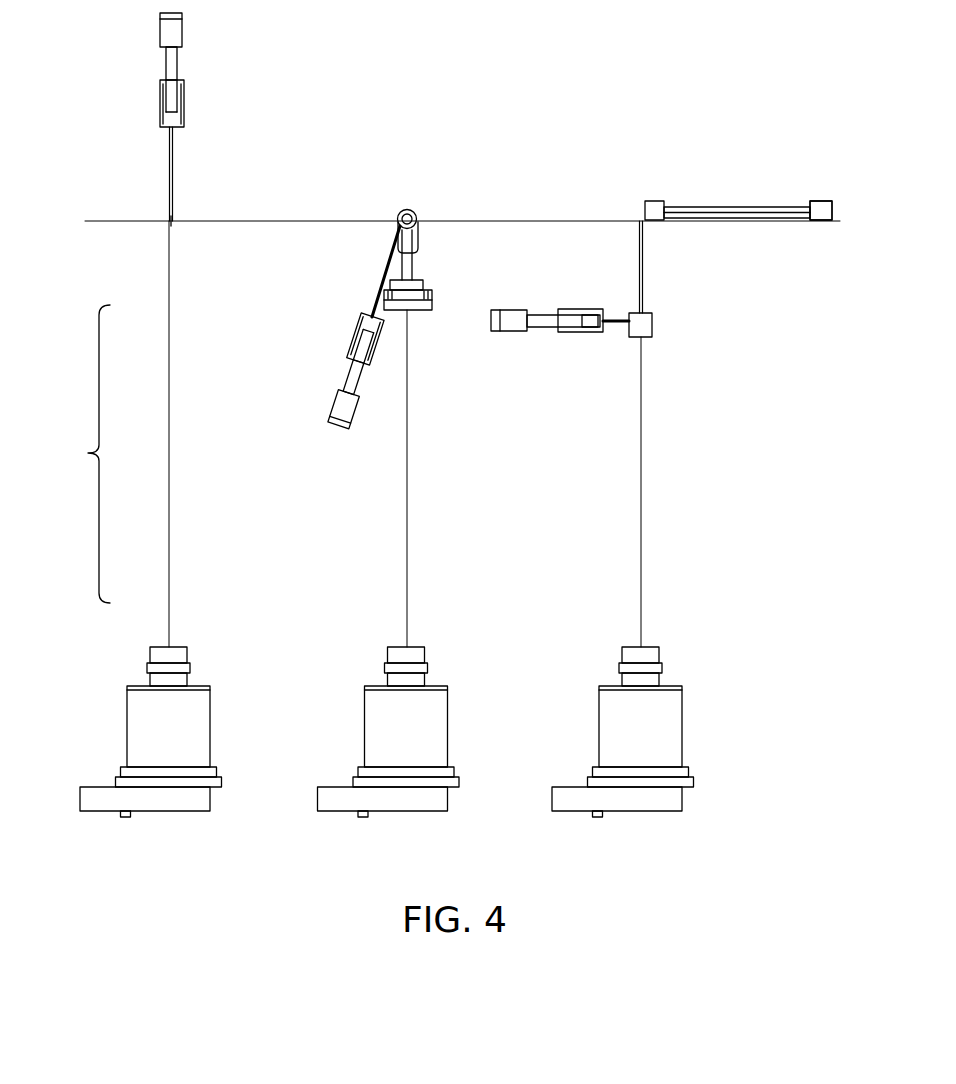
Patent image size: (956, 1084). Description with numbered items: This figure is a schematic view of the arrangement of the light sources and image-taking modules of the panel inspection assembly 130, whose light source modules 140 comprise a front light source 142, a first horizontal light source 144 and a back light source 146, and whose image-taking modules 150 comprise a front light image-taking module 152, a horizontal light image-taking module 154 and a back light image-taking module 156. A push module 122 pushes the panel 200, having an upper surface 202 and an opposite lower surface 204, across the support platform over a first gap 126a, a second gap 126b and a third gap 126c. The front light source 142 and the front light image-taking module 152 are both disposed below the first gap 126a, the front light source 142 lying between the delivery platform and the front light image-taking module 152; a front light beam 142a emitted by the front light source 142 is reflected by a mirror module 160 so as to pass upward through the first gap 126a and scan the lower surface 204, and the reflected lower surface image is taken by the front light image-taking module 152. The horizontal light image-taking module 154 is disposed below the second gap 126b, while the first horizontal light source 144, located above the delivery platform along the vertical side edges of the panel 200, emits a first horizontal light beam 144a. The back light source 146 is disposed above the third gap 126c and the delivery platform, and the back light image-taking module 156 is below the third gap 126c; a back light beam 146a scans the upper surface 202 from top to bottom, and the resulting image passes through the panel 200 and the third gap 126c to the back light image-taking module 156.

The push module 122 is at (645, 210).
The first gap 126a is at (649, 228).
The second gap 126b is at (393, 211).
The third gap 126c is at (162, 218).
The panel inspection assembly 130 is at (76, 454).
The light source modules 140 is at (157, 353).
The front light source 142 is at (535, 314).
The front light beam 142a is at (618, 319).
The first horizontal light source 144 is at (339, 404).
The first horizontal light beam 144a is at (381, 273).
The back light source 146 is at (177, 67).
The back light beam 146a is at (176, 184).
The image-taking modules 150 is at (149, 643).
The front light image-taking module 152 is at (670, 727).
The horizontal light image-taking module 154 is at (433, 730).
The back light image-taking module 156 is at (200, 727).
The mirror module 160 is at (652, 322).
The panel 200 is at (728, 205).
The upper surface 202 is at (815, 206).
The lower surface 204 is at (755, 219).